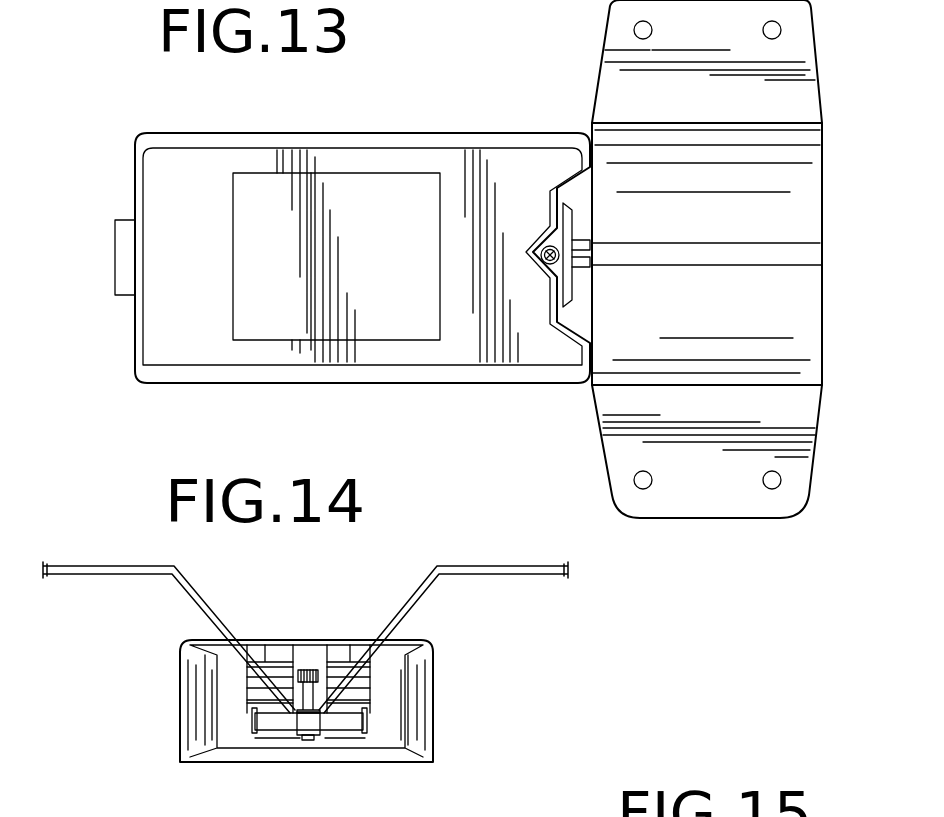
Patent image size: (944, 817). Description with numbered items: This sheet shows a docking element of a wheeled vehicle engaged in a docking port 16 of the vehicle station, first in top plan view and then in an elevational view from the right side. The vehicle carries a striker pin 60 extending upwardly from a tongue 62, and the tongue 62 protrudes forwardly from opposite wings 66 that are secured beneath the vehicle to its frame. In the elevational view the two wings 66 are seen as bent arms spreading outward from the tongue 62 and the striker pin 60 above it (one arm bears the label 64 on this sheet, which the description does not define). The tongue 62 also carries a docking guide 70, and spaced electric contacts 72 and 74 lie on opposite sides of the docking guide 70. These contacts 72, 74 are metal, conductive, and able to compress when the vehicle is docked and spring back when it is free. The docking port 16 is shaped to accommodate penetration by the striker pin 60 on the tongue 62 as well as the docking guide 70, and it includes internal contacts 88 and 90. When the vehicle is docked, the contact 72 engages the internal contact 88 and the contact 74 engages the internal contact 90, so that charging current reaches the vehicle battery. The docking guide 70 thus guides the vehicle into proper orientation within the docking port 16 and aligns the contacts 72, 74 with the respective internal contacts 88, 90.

In FIG. 13, the docking port 16 is at (288, 132).
In FIG. 14, the docking port 16 is at (428, 683).
In FIG. 14, the striker pin 60 is at (307, 668).
In FIG. 13, the tongue 62 is at (582, 242).
In FIG. 14, the tongue 62 is at (312, 727).
In FIG. 13, the first mounting arm 64 is at (793, 412).
In FIG. 14, the first mounting arm 64 is at (207, 607).
In FIG. 13, the wings 66 is at (790, 100).
In FIG. 14, the wings 66 is at (415, 595).
In FIG. 13, the docking guide 70 is at (562, 279).
In FIG. 14, the electric contact 72 is at (257, 717).
In FIG. 14, the electric contact 74 is at (365, 727).
In FIG. 14, the internal contact 88 is at (275, 737).
In FIG. 14, the internal contact 90 is at (343, 737).